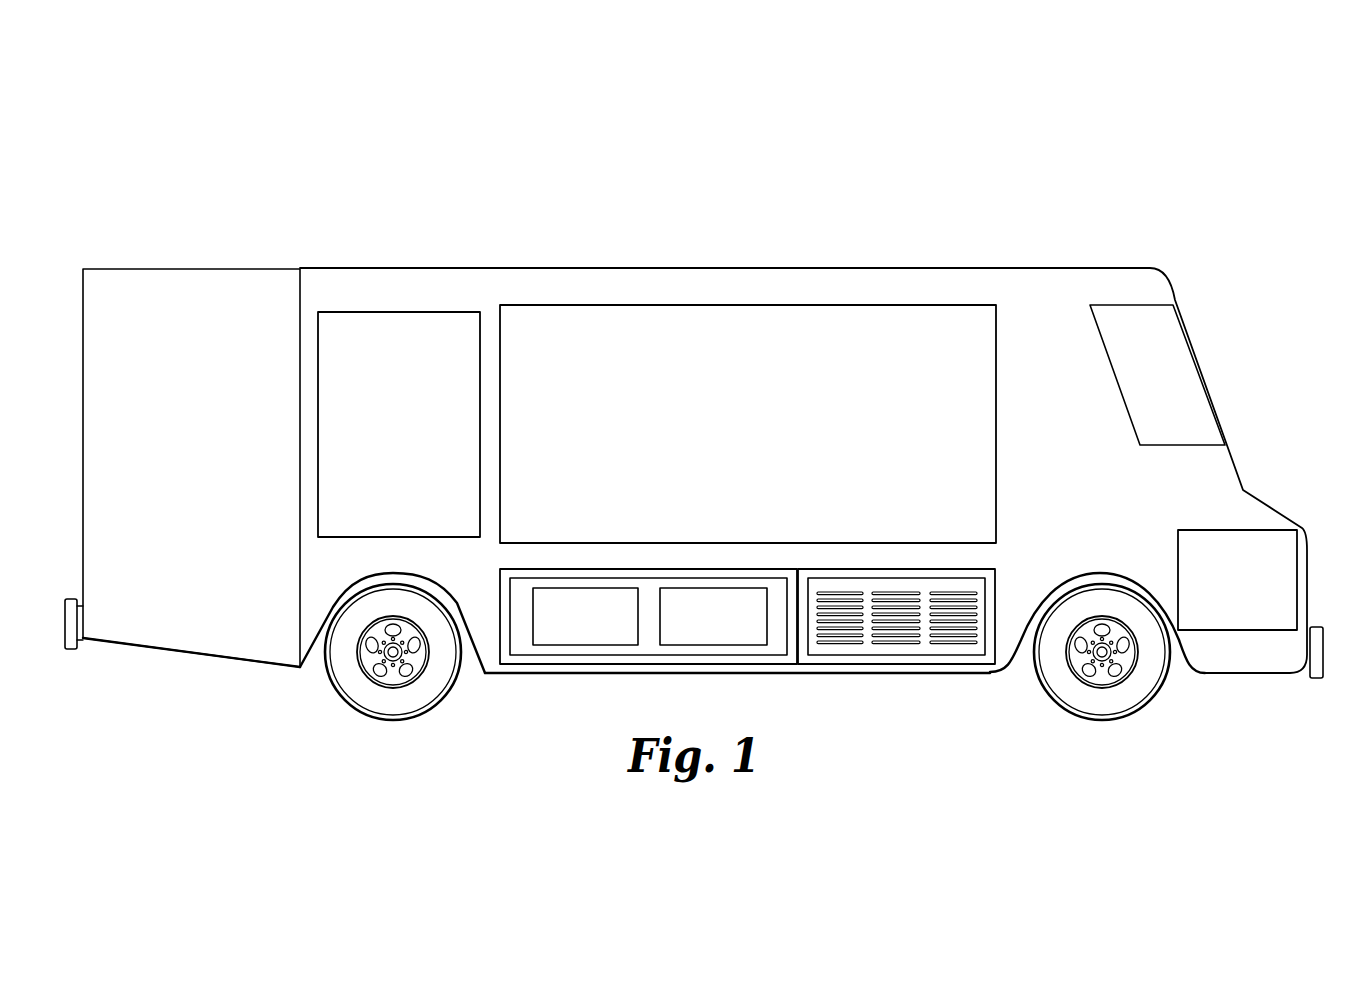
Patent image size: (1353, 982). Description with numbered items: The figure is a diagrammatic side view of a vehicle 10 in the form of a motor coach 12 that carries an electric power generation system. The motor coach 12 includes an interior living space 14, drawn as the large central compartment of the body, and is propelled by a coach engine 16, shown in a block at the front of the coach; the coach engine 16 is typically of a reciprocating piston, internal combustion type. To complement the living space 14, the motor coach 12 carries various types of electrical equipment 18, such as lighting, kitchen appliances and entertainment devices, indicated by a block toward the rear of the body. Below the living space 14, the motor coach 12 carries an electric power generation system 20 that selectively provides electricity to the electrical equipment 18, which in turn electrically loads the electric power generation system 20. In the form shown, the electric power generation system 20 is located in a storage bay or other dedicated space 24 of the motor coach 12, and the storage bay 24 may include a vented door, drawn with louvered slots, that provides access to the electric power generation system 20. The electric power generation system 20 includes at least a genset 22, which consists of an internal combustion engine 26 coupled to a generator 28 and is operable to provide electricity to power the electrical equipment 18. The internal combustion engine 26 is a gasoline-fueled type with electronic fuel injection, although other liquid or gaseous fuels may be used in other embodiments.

The vehicle 10 is at (694, 392).
The motor coach 12 is at (1103, 267).
The interior living space 14 is at (738, 436).
The coach engine 16 is at (1247, 618).
The electrical equipment 18 is at (391, 473).
The electric power generation system 20 is at (646, 650).
The genset 22 is at (648, 650).
The storage bay 24 is at (890, 655).
The internal combustion engine 26 is at (723, 645).
The generator 28 is at (617, 645).